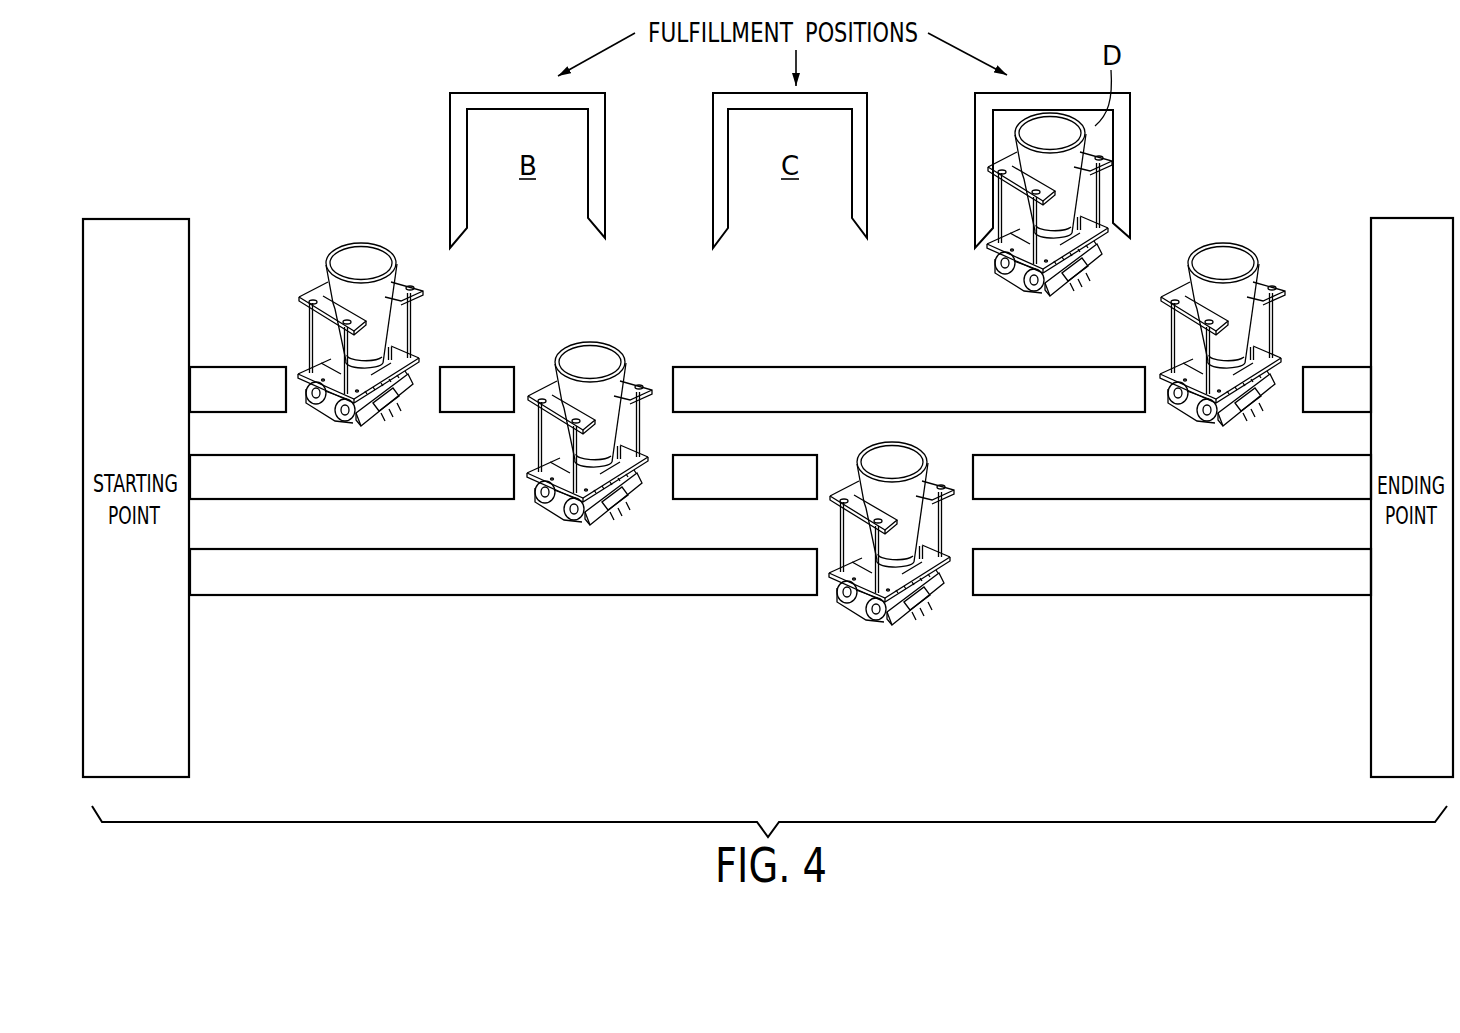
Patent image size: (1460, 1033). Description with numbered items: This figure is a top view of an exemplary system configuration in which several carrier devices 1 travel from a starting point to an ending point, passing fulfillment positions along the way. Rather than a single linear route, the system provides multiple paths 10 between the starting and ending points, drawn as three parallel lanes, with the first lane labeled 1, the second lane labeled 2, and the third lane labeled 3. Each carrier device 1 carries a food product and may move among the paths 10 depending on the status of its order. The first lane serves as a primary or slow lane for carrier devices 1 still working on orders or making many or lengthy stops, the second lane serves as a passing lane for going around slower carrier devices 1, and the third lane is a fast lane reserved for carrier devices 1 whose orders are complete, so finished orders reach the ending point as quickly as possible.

The carrier device 1 is at (308, 249).
The lane 2 / path segment 2 is at (780, 477).
The lane 3 / path segment 3 is at (780, 572).
The paths 10 is at (232, 367).